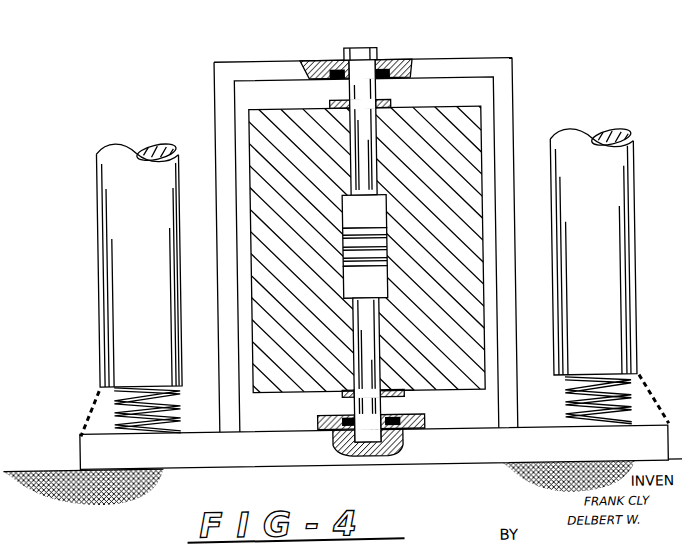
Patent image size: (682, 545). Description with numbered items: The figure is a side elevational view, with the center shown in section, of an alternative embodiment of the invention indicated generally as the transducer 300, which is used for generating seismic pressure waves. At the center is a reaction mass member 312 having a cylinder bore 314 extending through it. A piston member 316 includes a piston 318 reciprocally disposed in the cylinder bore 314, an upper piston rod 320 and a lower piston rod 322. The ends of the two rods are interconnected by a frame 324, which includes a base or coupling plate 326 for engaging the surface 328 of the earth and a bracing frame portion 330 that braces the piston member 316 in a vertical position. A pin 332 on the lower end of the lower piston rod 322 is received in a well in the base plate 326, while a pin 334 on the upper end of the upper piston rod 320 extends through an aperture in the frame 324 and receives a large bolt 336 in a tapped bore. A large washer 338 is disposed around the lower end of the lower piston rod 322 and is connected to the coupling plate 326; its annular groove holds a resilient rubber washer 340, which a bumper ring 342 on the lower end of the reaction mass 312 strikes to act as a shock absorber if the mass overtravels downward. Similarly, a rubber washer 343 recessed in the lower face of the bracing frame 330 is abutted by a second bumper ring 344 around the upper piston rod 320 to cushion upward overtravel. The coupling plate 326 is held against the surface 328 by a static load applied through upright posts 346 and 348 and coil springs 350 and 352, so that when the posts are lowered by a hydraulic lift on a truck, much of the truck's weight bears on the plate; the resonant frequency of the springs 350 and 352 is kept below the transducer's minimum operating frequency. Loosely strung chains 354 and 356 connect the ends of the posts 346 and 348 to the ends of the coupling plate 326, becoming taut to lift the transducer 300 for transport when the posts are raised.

The transducer 300 is at (199, 84).
The reaction mass member 312 is at (271, 144).
The cylinder bore 314 is at (345, 209).
The piston member 316 is at (352, 274).
The piston 318 is at (348, 240).
The upper piston rod 320 is at (362, 160).
The lower piston rod 322 is at (366, 334).
The frame 324 is at (430, 63).
The base or coupling plate 326 is at (250, 457).
The surface of the earth 328 is at (60, 466).
The bracing frame portion 330 is at (510, 118).
The pin 332 is at (400, 440).
The pin 334 is at (376, 68).
The bolt 336 is at (372, 49).
The large washer 338 is at (418, 416).
The resilient rubber washer 340 is at (348, 416).
The bumper ring 342 is at (398, 391).
The rubber washer 343 is at (386, 79).
The second bumper ring 344 is at (388, 109).
The upright post 346 is at (100, 262).
The upright post 348 is at (622, 252).
The coil spring 350 is at (178, 426).
The coil spring 352 is at (567, 398).
The chain 354 is at (95, 388).
The chain 356 is at (642, 384).